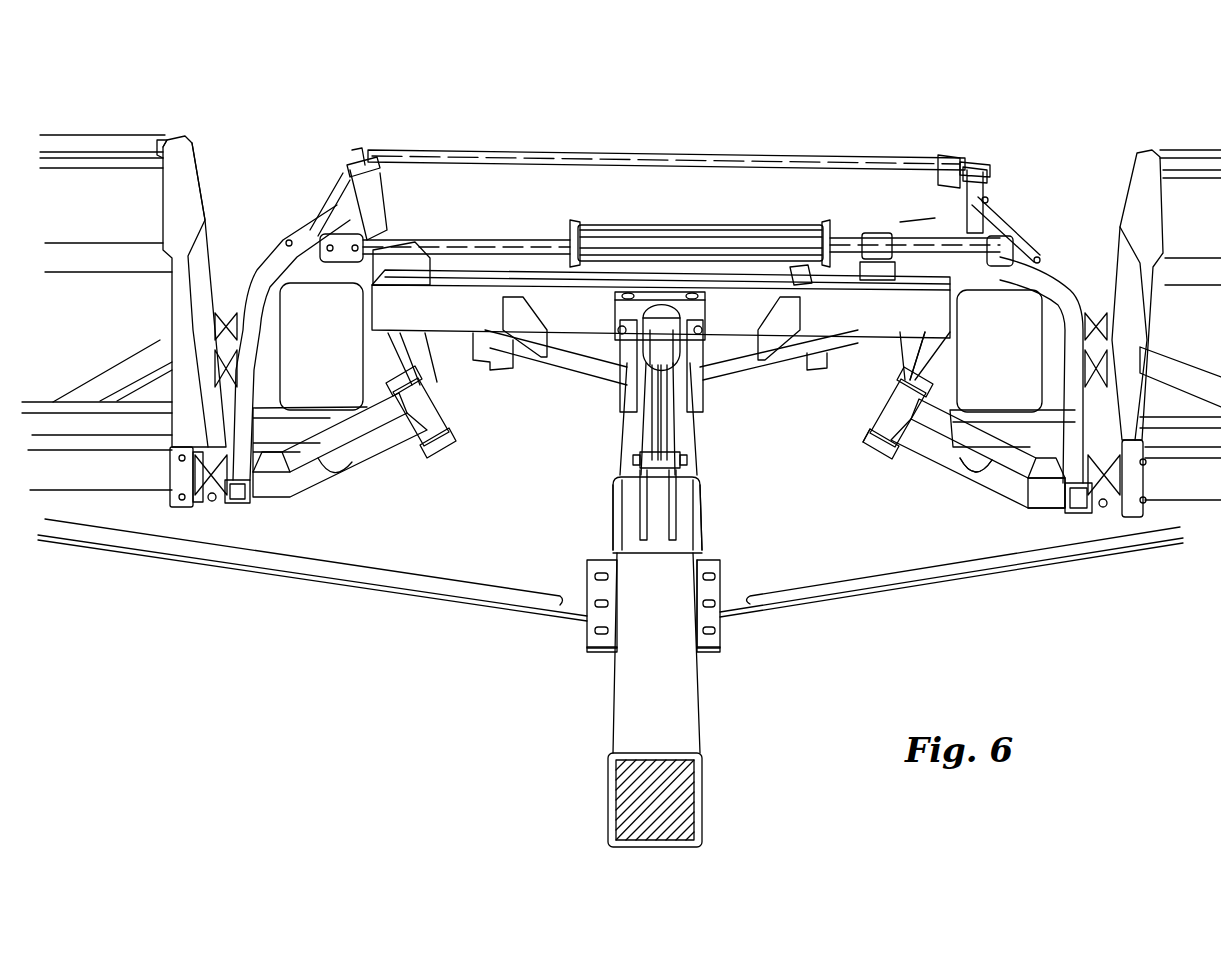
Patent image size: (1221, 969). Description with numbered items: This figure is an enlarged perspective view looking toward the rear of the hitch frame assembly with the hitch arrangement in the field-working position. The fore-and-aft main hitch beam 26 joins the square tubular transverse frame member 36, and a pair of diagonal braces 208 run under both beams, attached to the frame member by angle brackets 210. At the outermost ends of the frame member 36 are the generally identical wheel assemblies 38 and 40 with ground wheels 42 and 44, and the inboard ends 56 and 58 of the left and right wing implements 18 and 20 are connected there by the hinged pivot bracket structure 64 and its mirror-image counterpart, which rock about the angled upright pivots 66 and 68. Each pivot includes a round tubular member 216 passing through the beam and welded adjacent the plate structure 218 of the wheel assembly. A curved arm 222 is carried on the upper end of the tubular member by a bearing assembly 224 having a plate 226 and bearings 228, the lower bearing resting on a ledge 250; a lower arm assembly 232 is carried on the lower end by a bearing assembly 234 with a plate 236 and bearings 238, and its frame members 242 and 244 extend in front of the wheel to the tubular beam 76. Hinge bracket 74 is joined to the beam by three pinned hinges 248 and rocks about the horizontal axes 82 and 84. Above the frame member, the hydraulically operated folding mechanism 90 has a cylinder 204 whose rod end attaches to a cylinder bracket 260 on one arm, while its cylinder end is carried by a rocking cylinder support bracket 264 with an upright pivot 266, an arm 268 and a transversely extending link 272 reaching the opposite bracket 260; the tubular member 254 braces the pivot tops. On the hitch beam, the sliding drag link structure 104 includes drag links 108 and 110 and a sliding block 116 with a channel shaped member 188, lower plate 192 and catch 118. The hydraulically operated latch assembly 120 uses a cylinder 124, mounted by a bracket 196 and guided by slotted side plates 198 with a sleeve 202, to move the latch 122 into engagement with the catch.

The right wing implement 20 is at (238, 110).
The inboard end 58 is at (200, 174).
The inboard end 56 is at (1130, 178).
The left wing implement 18 is at (1122, 140).
The top cross bar 254 is at (590, 148).
The hinged pivot bracket structure 64 is at (246, 242).
The curved arm 222 is at (332, 207).
The cylinder bracket 260 is at (288, 230).
The upright pivot 68 is at (383, 205).
The upright pivot 66 is at (947, 205).
The bearing assembly 224 is at (978, 170).
The plate 226 is at (987, 200).
The bearings 228 is at (947, 157).
The ledge 250 is at (417, 247).
The transverse frame member 36 is at (535, 277).
The hydraulically operated folding mechanism 90 is at (664, 202).
The cylinder 204 is at (707, 233).
The rocking cylinder support bracket 264 is at (802, 212).
The transversely extending link 272 is at (883, 277).
The upright pivot 266 is at (810, 283).
The arm 268 is at (880, 268).
The angle brackets 210 is at (503, 312).
The bracket 196 is at (707, 317).
The hydraulic operating cylinder 124 is at (655, 335).
The slotted side plates 198 is at (630, 392).
The diagonal braces 208 is at (555, 365).
The hydraulically operated latch assembly 120 is at (623, 432).
The sleeve 202 is at (675, 440).
The channel shaped member 188 is at (700, 540).
The sliding block 116 is at (613, 473).
The catch 118 is at (672, 480).
The latch 122 is at (650, 488).
The main hitch beam 26 is at (668, 704).
The sliding drag link structure 104 is at (755, 649).
The lower plate 192 is at (712, 652).
The drag link 110 is at (300, 577).
The drag link 108 is at (972, 582).
The hinge bracket 74 is at (182, 505).
The tubular beam 76 is at (1063, 513).
The horizontal axis 84 is at (210, 505).
The horizontal axis 82 is at (1102, 507).
The pinned hinges 248 is at (233, 343).
The ground wheel 44 is at (335, 364).
The ground wheel 42 is at (1010, 369).
The frame member 242 is at (1045, 447).
The wheel assembly 40 is at (362, 487).
The wheel assembly 38 is at (923, 492).
The lower arm assembly 232 is at (967, 470).
The frame member 244 is at (1047, 502).
The bearing assembly 234 is at (882, 468).
The plate structure 218 is at (410, 377).
The bearings 238 is at (888, 400).
The round tubular member 216 is at (890, 380).
The plate 236 is at (887, 445).